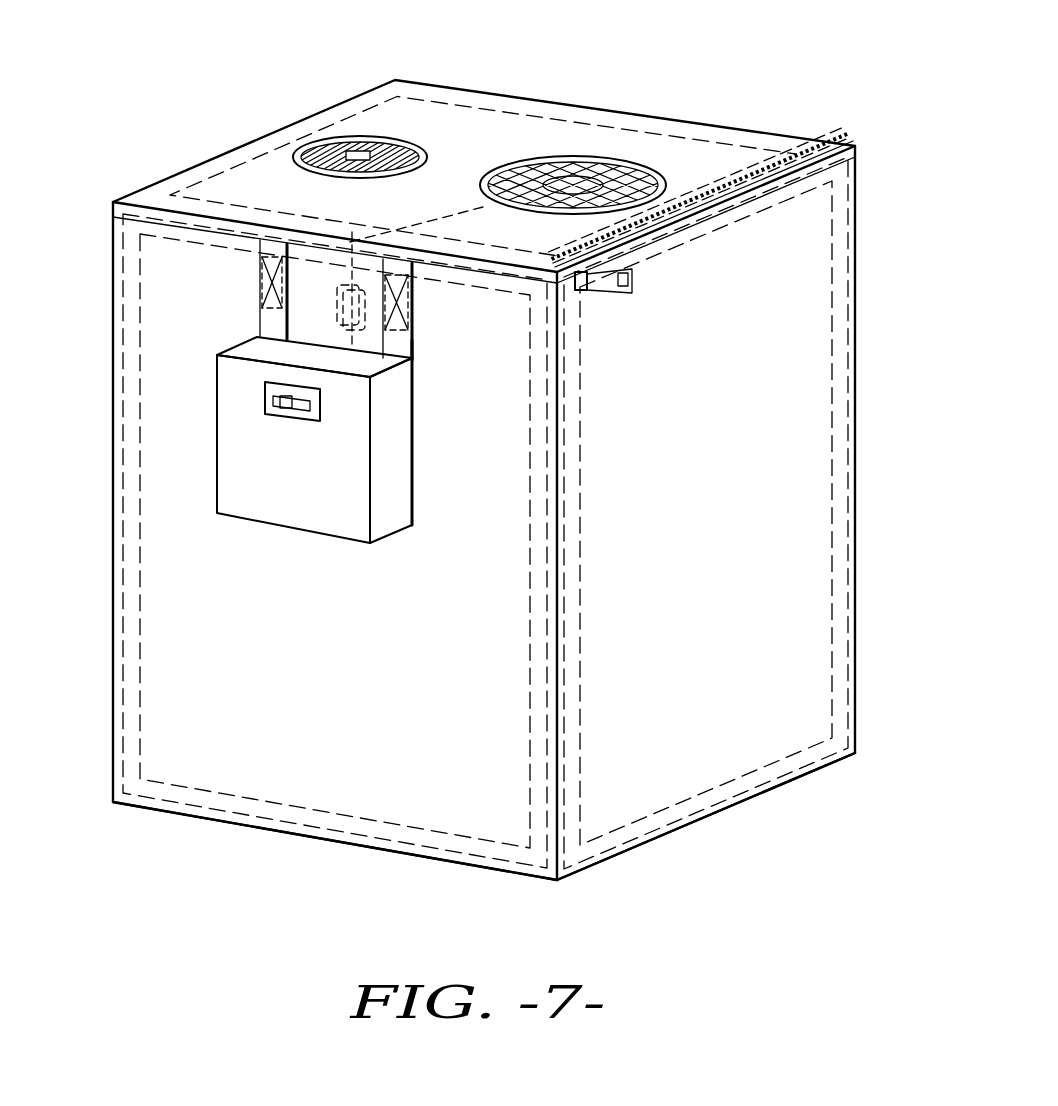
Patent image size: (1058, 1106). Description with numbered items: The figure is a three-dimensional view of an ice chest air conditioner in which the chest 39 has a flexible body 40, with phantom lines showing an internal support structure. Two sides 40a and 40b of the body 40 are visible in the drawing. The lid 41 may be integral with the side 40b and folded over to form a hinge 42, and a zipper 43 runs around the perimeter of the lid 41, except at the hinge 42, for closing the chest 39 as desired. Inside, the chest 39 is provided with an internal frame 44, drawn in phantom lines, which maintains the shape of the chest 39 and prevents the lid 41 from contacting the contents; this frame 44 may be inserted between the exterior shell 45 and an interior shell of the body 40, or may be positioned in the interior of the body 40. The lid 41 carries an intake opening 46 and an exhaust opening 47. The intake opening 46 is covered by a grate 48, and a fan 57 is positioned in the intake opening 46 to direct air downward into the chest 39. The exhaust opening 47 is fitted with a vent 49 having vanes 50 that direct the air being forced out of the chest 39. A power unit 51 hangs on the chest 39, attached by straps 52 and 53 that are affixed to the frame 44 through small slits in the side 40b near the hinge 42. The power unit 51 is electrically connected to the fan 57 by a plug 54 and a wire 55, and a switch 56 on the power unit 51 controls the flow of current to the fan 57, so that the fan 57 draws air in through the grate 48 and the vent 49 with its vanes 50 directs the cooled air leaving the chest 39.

The chest 39 is at (484, 444).
The flexible body 40 is at (808, 292).
The side 40a is at (723, 748).
The side 40b is at (447, 808).
The lid 41 is at (458, 102).
The hinge 42 is at (163, 232).
The zipper 43 is at (787, 197).
The internal frame 44 is at (120, 328).
The exterior shell 45 is at (165, 602).
The intake opening 46 is at (600, 160).
The exhaust opening 47 is at (330, 160).
The grate 48 is at (565, 167).
The vent 49 is at (387, 160).
The vanes 50 is at (338, 150).
The power unit 51 is at (217, 478).
The strap 52 is at (253, 285).
The strap 53 is at (412, 345).
The plug 54 is at (412, 293).
The wire 55 is at (388, 227).
The switch 56 is at (265, 393).
The fan 57 is at (627, 160).